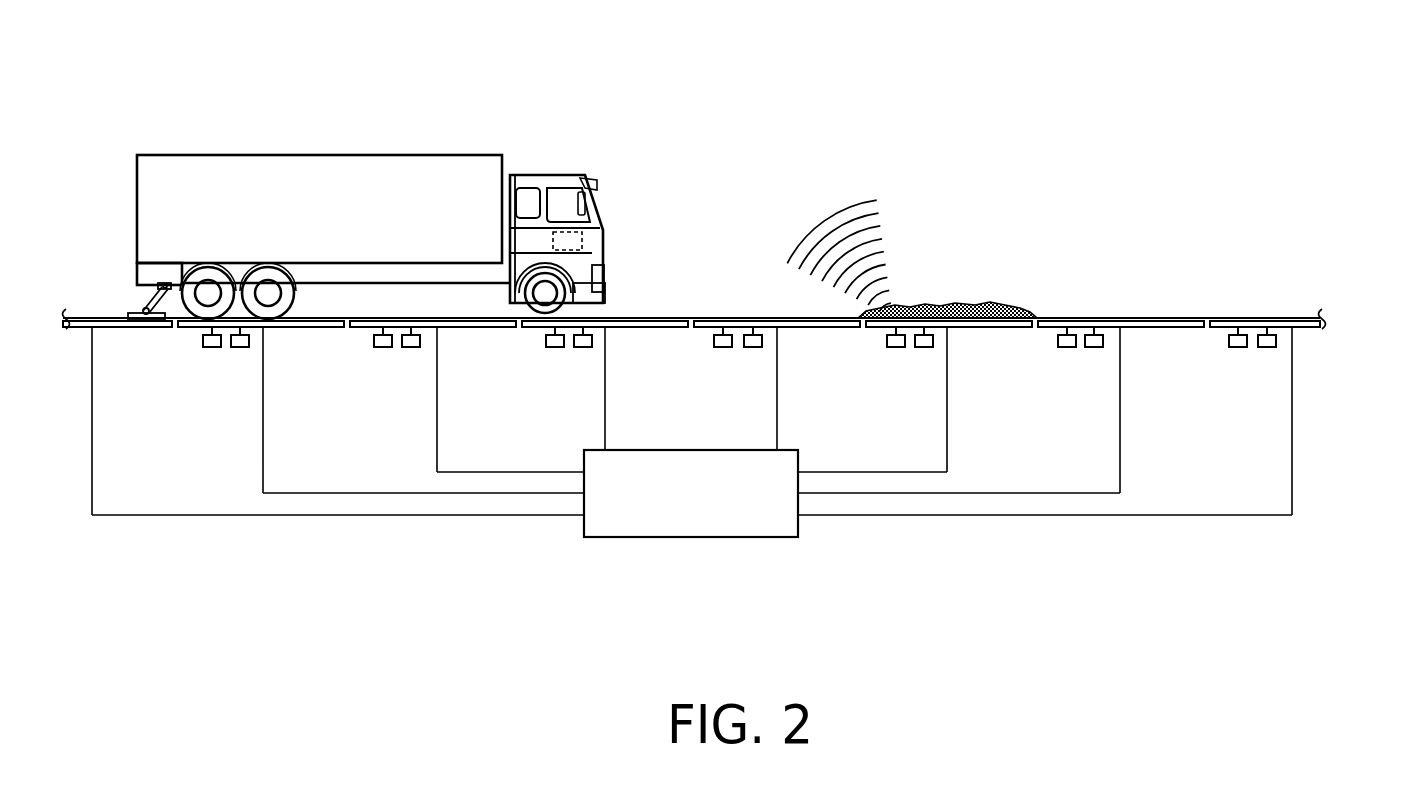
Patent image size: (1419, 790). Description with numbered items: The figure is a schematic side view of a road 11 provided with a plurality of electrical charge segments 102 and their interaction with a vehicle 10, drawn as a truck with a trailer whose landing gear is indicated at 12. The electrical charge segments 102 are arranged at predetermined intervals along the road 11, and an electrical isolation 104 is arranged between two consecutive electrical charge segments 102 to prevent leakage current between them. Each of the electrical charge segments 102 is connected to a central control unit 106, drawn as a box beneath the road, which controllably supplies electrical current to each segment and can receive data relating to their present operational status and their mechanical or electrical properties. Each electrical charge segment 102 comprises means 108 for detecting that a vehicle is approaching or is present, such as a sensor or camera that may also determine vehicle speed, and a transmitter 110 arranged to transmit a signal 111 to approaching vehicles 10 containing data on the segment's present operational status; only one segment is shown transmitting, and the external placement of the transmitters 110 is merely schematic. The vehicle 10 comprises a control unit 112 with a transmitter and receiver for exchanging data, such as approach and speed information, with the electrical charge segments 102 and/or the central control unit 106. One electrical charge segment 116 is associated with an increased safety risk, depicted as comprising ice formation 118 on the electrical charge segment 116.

The vehicle 10 is at (421, 173).
The road 11 is at (1130, 317).
The trailer landing gear 12 is at (111, 274).
The electrical charge segment 102 is at (130, 327).
The electrical isolation 104 is at (693, 327).
The central control unit 106 is at (792, 448).
The means for detecting a vehicle 108 is at (240, 347).
The transmitter 110 is at (212, 347).
The signal 111 is at (856, 202).
The control unit 112 is at (590, 240).
The electrical charge segment associated with an increased safety risk 116 is at (1020, 313).
The ice formation 118 is at (952, 306).